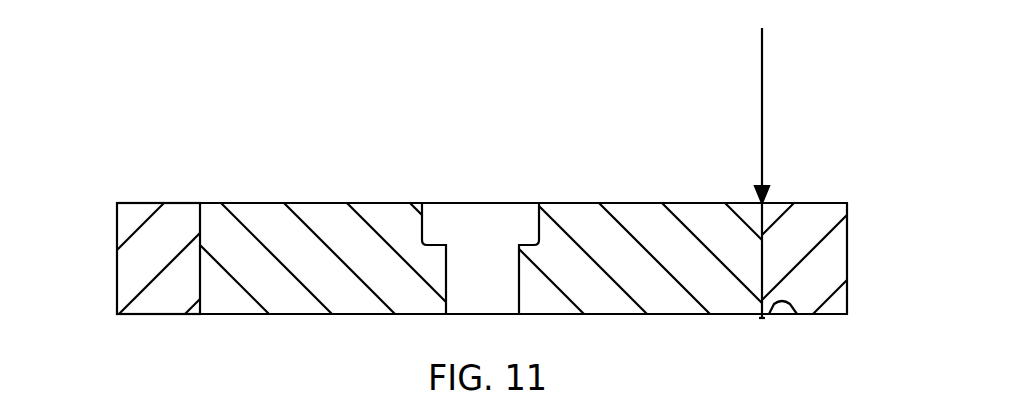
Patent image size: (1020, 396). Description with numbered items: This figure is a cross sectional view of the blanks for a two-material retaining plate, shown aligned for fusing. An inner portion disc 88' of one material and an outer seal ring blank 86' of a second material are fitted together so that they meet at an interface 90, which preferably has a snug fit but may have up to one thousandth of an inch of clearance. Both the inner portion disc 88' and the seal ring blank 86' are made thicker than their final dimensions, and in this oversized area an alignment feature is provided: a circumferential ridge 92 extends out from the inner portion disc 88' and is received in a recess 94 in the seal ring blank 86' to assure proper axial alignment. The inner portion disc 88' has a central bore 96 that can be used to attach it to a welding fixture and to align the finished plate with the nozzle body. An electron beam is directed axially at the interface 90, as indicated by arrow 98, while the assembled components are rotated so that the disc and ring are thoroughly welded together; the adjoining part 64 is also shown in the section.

The support member 64 is at (130, 201).
The inner portion disc 88' is at (481, 228).
The central bore 96 is at (538, 230).
The seal ring blank 86' is at (844, 258).
The arrow 98 is at (762, 80).
The interface 90 is at (763, 258).
The circumferential ridge 92 is at (764, 318).
The recess 94 is at (790, 305).